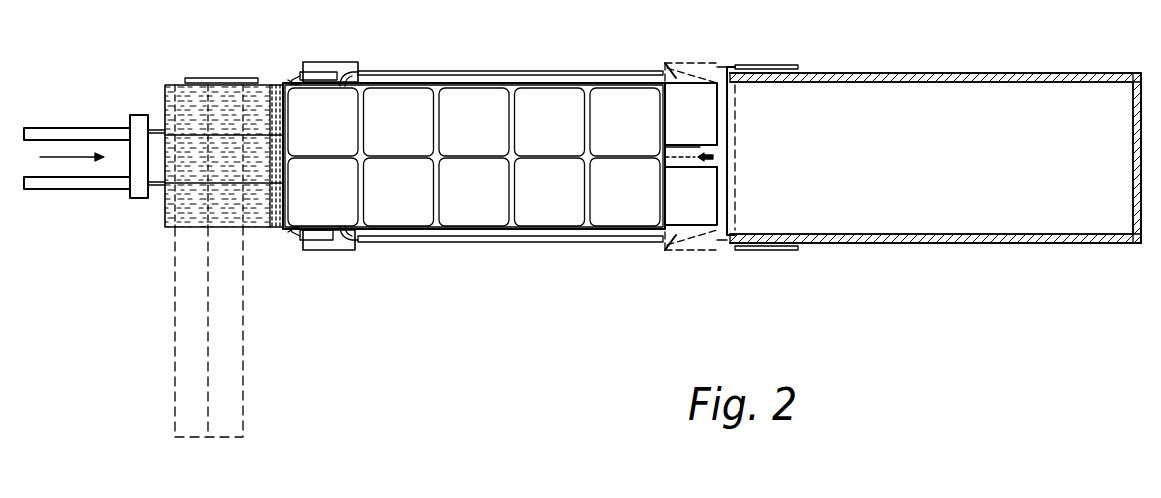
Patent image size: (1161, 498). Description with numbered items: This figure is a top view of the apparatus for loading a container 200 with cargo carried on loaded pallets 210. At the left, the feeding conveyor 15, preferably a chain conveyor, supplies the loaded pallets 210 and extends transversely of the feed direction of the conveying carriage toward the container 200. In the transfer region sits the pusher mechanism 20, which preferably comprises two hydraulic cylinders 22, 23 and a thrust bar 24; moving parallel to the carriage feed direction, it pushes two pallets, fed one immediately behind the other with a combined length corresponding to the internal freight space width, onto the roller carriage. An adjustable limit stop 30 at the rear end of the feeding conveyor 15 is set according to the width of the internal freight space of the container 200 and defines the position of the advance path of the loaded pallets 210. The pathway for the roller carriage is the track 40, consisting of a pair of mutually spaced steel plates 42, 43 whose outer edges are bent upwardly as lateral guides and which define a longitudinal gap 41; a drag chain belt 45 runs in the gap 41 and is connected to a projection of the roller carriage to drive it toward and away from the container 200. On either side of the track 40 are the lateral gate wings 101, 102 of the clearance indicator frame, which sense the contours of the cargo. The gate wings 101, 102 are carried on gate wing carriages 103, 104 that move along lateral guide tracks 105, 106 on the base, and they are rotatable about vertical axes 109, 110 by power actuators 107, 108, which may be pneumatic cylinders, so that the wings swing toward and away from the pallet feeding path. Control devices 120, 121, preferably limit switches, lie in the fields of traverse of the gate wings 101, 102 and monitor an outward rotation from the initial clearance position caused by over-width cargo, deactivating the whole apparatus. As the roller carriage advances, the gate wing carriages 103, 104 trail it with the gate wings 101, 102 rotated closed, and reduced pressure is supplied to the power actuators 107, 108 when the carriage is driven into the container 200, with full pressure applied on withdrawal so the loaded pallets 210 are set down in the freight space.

The feeding conveyor 15 is at (195, 341).
The pusher mechanism 20 is at (82, 128).
The hydraulic cylinder 22 is at (32, 128).
The hydraulic cylinder 23 is at (34, 189).
The thrust bar 24 is at (147, 115).
The adjustable limit stop 30 is at (212, 78).
The track 40 is at (695, 137).
The longitudinal gap 41 is at (675, 148).
The steel plate 42 is at (690, 100).
The steel plate 43 is at (690, 205).
The drag chain belt 45 is at (682, 158).
The gate wing 101 is at (310, 85).
The gate wing 102 is at (311, 228).
The gate wing carriage 103 is at (340, 62).
The gate wing carriage 104 is at (330, 250).
The lateral guide track 105 is at (464, 71).
The lateral guide track 106 is at (478, 242).
The power actuator 107 is at (318, 72).
The power actuator 108 is at (318, 240).
The vertical axis 109 is at (352, 70).
The vertical axis 110 is at (362, 243).
The control device 120 is at (292, 78).
The control device 121 is at (288, 232).
The container 200 is at (884, 73).
The loaded pallet 210 is at (558, 137).